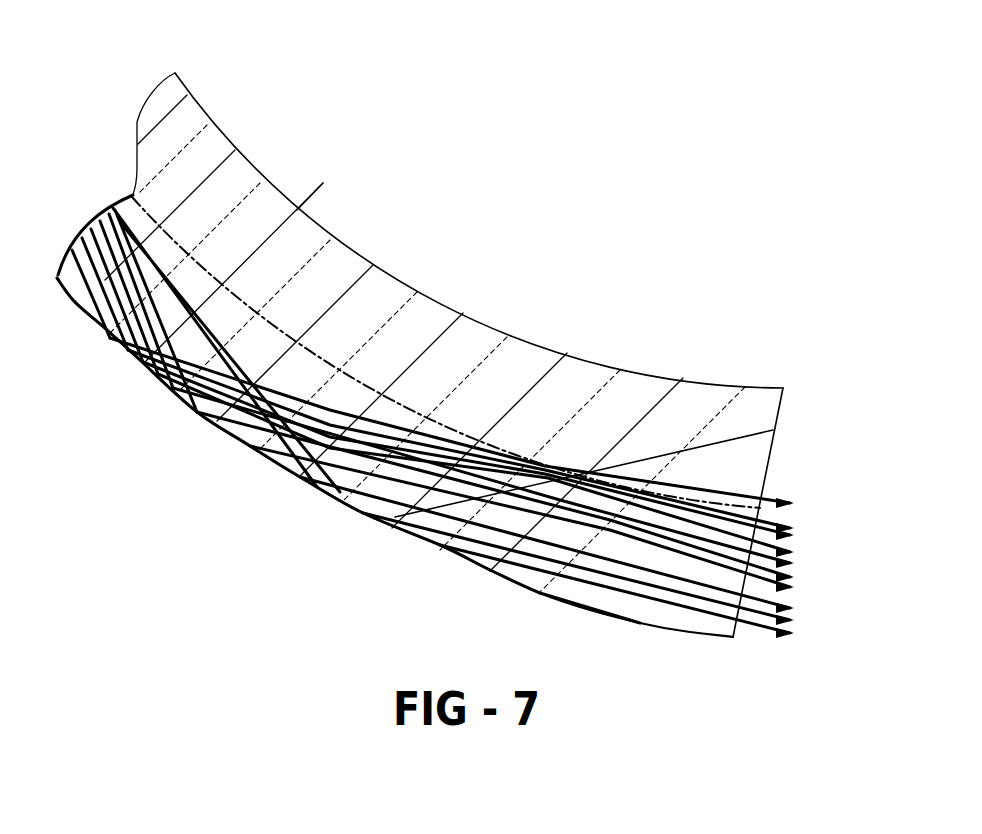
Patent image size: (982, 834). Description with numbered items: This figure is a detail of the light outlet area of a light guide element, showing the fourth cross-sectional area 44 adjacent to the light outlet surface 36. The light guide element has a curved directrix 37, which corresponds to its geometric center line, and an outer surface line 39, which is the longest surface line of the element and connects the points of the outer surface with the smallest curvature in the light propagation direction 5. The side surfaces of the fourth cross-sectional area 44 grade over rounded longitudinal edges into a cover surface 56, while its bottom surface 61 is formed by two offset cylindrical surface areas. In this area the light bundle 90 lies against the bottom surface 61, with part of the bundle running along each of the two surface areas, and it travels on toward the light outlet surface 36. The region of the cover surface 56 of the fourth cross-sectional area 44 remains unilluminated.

The light propagation direction 5 is at (298, 292).
The light outlet surface 36 is at (782, 420).
The directrix 37 is at (357, 383).
The outer surface line 39 is at (573, 607).
The fourth cross-sectional area 44 is at (305, 495).
The cover surface 56 is at (502, 327).
The bottom surface 61 is at (597, 607).
The light bundle 90 is at (483, 416).